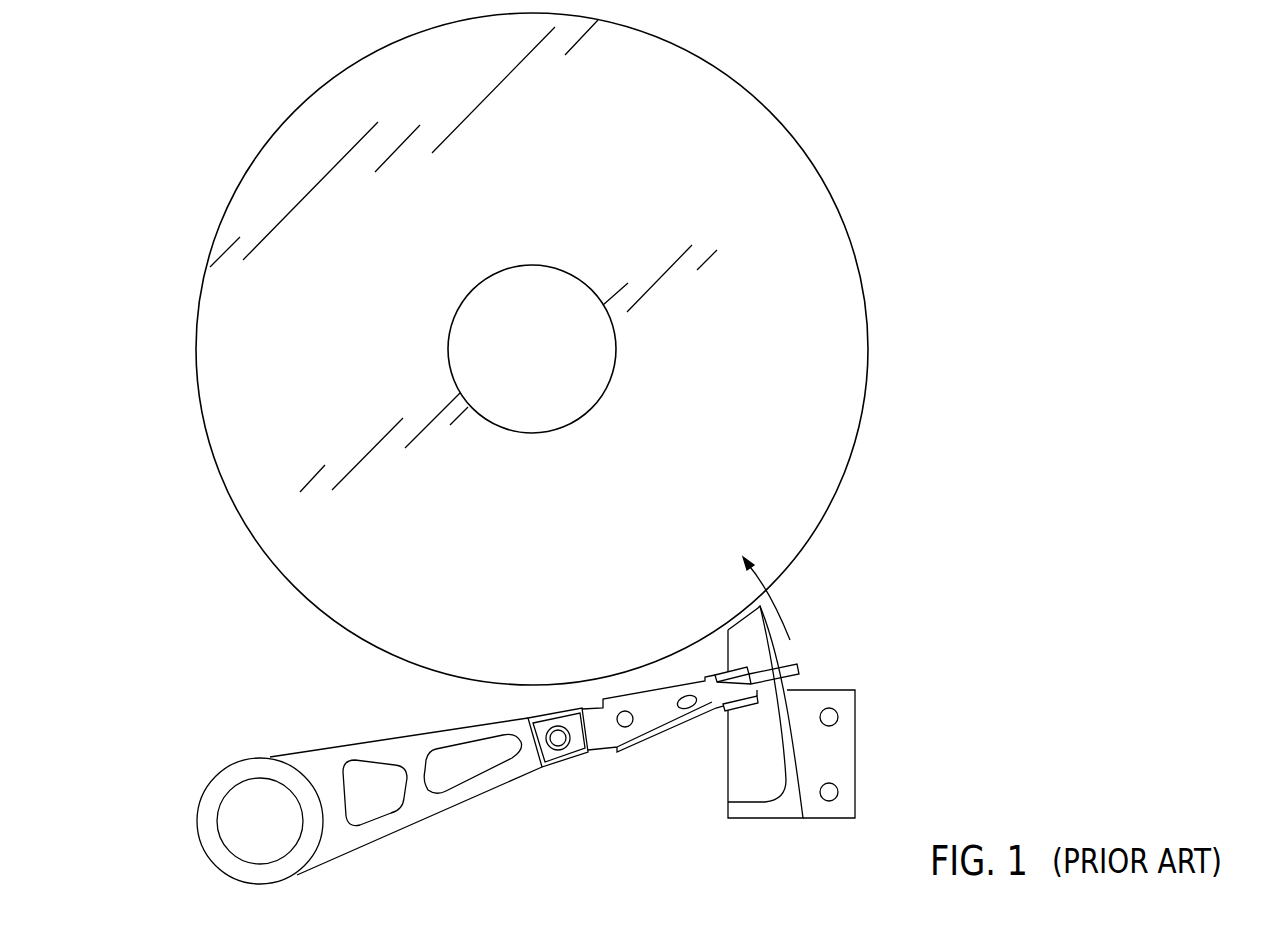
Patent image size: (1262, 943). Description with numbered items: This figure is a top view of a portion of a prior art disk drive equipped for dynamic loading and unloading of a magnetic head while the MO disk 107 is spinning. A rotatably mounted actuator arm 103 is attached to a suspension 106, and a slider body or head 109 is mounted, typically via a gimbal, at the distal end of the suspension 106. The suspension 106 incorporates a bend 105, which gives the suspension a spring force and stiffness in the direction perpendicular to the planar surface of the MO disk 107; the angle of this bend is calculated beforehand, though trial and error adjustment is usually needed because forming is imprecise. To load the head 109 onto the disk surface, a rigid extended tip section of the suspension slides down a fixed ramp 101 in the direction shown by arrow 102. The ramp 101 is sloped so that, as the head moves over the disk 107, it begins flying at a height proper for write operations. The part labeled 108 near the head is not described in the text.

The fixed ramp 101 is at (786, 803).
The arrow 102 is at (775, 603).
The actuator arm 103 is at (460, 808).
The bend 105 is at (587, 757).
The suspension 106 is at (650, 740).
The MO disk 107 is at (843, 480).
The head slider 108 is at (800, 673).
The slider body or head 109 is at (725, 712).